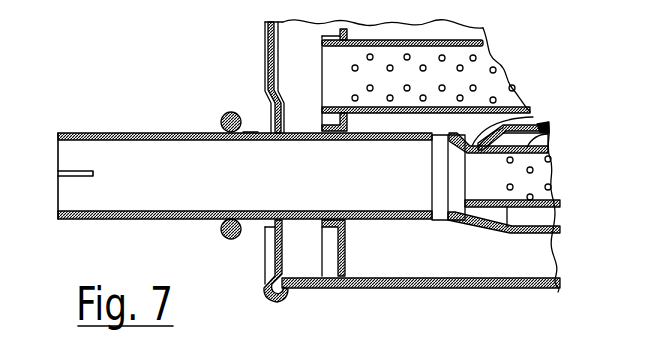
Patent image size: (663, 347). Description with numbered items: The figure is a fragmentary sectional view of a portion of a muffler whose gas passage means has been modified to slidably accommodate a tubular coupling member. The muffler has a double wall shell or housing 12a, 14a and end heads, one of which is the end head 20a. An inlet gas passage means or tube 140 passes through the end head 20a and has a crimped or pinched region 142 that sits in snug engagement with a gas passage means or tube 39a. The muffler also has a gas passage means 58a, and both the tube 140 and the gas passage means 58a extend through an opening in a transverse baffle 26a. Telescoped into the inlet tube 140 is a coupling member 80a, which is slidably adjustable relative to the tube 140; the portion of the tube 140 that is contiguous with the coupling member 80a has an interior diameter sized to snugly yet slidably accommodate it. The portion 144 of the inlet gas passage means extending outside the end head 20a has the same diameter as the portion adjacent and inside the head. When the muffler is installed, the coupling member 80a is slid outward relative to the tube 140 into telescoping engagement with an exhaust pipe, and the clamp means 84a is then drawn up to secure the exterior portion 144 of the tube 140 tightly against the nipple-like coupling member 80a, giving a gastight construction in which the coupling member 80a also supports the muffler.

The coupling member 80a is at (100, 133).
The clamp means 84a is at (217, 111).
The exterior portion of the inlet gas passage means 144 is at (250, 130).
The end head 20a is at (266, 34).
The gas passage means 58a is at (453, 42).
The transverse baffle 26a is at (349, 248).
The housing wall 12a is at (466, 288).
The inlet gas passage means 140 is at (384, 227).
The housing wall 14a is at (483, 278).
The crimped region 142 is at (535, 117).
The gas passage means 39a is at (548, 134).